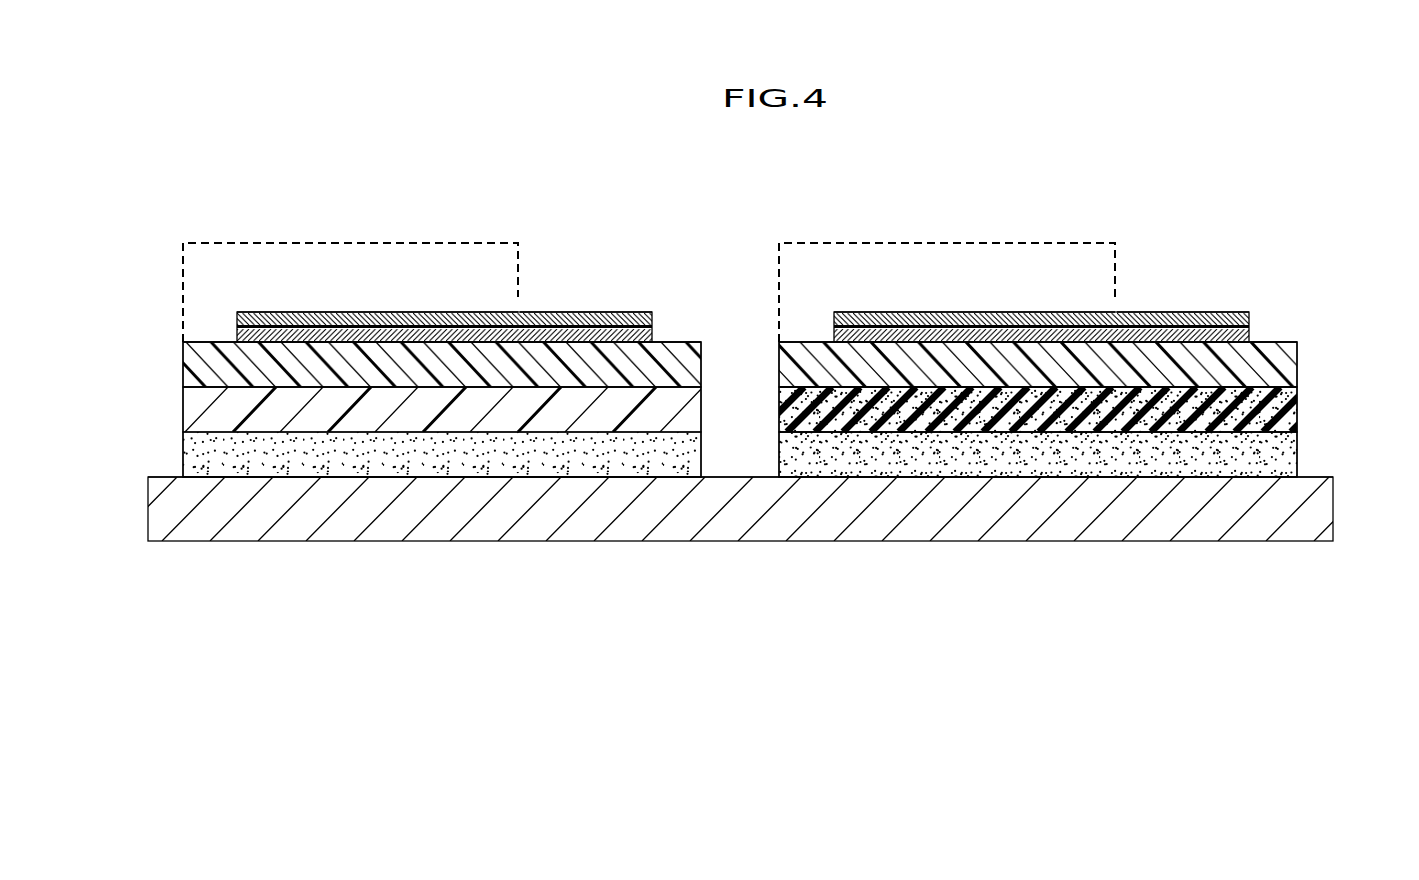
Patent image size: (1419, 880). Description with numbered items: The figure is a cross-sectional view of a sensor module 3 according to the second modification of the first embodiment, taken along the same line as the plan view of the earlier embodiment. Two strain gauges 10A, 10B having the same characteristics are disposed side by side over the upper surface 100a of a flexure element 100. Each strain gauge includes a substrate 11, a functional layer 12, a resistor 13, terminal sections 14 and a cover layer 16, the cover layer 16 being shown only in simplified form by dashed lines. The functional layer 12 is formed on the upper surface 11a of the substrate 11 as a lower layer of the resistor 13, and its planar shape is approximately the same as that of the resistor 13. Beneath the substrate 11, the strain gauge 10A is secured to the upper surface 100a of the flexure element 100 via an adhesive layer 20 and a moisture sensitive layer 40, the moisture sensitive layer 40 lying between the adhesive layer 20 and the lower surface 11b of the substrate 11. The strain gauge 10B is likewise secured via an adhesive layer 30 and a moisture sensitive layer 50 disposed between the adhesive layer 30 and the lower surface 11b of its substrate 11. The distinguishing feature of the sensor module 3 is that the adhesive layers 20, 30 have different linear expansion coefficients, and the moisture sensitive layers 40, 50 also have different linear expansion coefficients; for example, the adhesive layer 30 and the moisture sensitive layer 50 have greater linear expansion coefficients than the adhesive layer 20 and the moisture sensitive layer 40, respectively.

The sensor module 3 is at (126, 176).
The strain gauge 10A is at (416, 355).
The strain gauge 10B is at (1010, 355).
The substrate 11 is at (201, 365).
The upper surface of the substrate 11a is at (212, 343).
The lower surface of the substrate 11b is at (212, 388).
The functional layer 12 is at (243, 335).
The resistor 13 is at (518, 308).
The terminal sections 14 is at (520, 308).
The cover layer 16 is at (258, 242).
The adhesive layer 20 is at (200, 454).
The adhesive layer 30 is at (797, 453).
The moisture sensitive layer 40 is at (201, 420).
The moisture sensitive layer 50 is at (800, 417).
The flexure element 100 is at (741, 515).
The upper surface of the flexure element 100a is at (1313, 478).